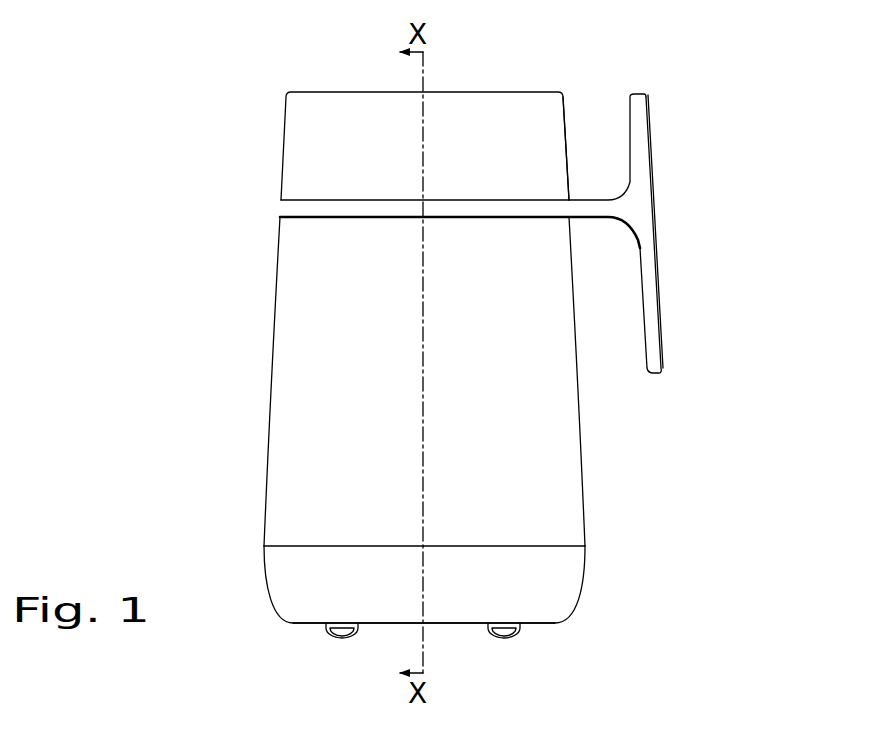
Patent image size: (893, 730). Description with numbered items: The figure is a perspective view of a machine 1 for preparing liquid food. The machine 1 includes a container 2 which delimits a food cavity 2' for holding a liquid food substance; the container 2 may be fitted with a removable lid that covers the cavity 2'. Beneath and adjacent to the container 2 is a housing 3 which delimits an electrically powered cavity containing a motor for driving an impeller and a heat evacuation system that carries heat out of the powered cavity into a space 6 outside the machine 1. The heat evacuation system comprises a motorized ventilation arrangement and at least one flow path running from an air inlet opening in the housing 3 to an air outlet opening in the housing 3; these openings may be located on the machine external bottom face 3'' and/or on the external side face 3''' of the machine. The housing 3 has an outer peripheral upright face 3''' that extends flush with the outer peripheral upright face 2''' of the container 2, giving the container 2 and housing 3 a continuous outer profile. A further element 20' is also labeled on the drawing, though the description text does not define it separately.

The machine 1 is at (140, 90).
The container 2 is at (429, 137).
The food cavity 2' is at (510, 724).
The outer peripheral upright face of container 2''' is at (599, 113).
The housing 3 is at (450, 447).
The machine external bottom face 3'' is at (464, 646).
The outer peripheral upright face of housing 3''' is at (644, 381).
The space outside machine 6 is at (384, 650).
The lid element 20' is at (350, 724).